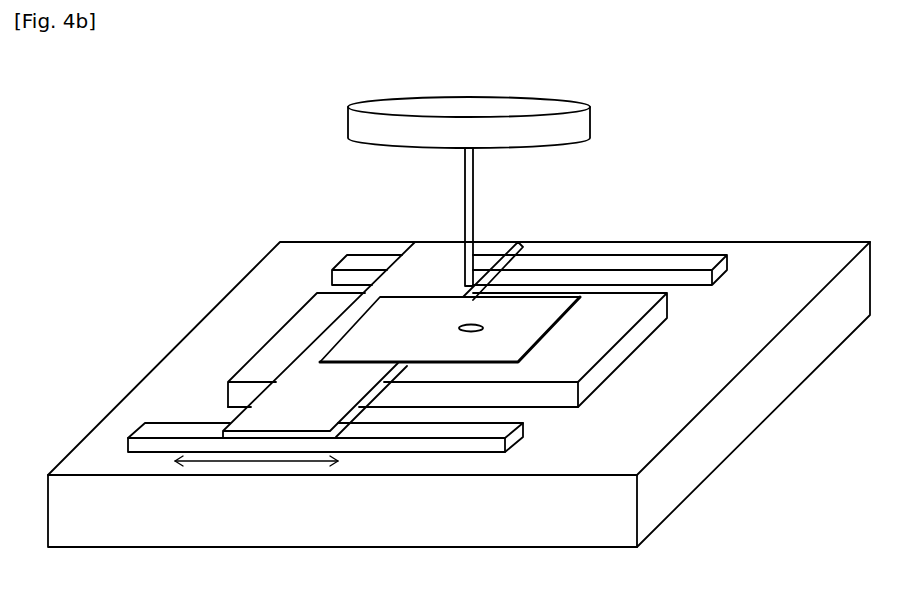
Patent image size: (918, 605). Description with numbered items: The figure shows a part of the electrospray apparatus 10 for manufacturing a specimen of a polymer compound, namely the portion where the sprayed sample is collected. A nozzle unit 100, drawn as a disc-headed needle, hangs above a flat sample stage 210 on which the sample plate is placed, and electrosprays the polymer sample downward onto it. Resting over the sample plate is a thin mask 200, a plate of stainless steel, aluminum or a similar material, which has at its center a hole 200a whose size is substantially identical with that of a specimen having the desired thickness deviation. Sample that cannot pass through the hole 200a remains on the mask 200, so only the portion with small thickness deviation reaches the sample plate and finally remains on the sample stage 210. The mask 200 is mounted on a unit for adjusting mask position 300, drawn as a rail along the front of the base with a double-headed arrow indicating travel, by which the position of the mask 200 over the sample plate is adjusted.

The electrospray apparatus 10 is at (153, 115).
The nozzle unit 100 is at (466, 217).
The mask 200 is at (502, 330).
The hole 200a is at (473, 323).
The sample stage 210 is at (605, 340).
The unit for adjusting mask position 300 is at (427, 450).